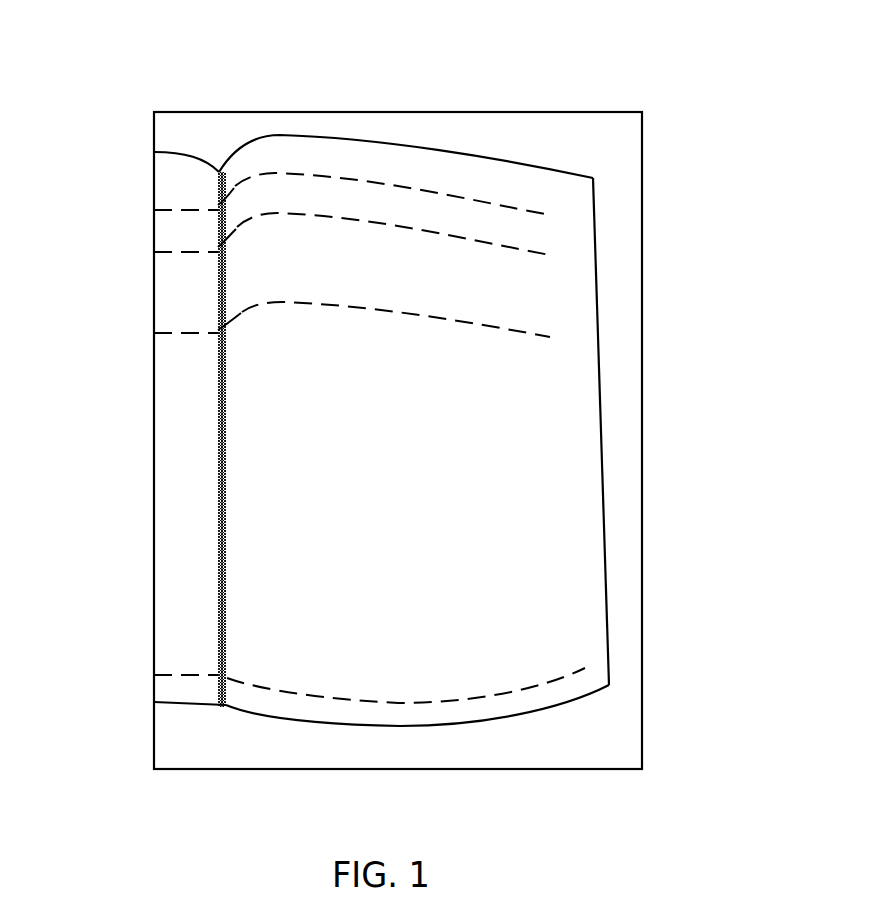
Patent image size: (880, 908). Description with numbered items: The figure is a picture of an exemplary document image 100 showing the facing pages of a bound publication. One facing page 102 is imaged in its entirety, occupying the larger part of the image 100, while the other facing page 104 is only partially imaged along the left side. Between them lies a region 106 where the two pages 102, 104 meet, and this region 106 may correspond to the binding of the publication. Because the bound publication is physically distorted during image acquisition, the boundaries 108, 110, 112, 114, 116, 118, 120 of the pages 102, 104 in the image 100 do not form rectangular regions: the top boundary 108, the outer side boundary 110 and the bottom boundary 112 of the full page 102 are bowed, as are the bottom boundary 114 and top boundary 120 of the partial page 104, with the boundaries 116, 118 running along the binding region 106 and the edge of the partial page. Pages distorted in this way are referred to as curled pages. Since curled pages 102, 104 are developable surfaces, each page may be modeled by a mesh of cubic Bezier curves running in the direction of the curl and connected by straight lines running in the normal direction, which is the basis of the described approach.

The document image 100 is at (406, 427).
The facing page 102 is at (473, 429).
The other facing page 104 is at (163, 490).
The region where the pages meet 106 is at (220, 573).
The page boundary 108 is at (448, 158).
The page boundary 110 is at (600, 278).
The page boundary 112 is at (517, 717).
The page boundary 114 is at (188, 710).
The page boundary 116 is at (152, 439).
The page boundary 118 is at (167, 427).
The page boundary 120 is at (178, 150).